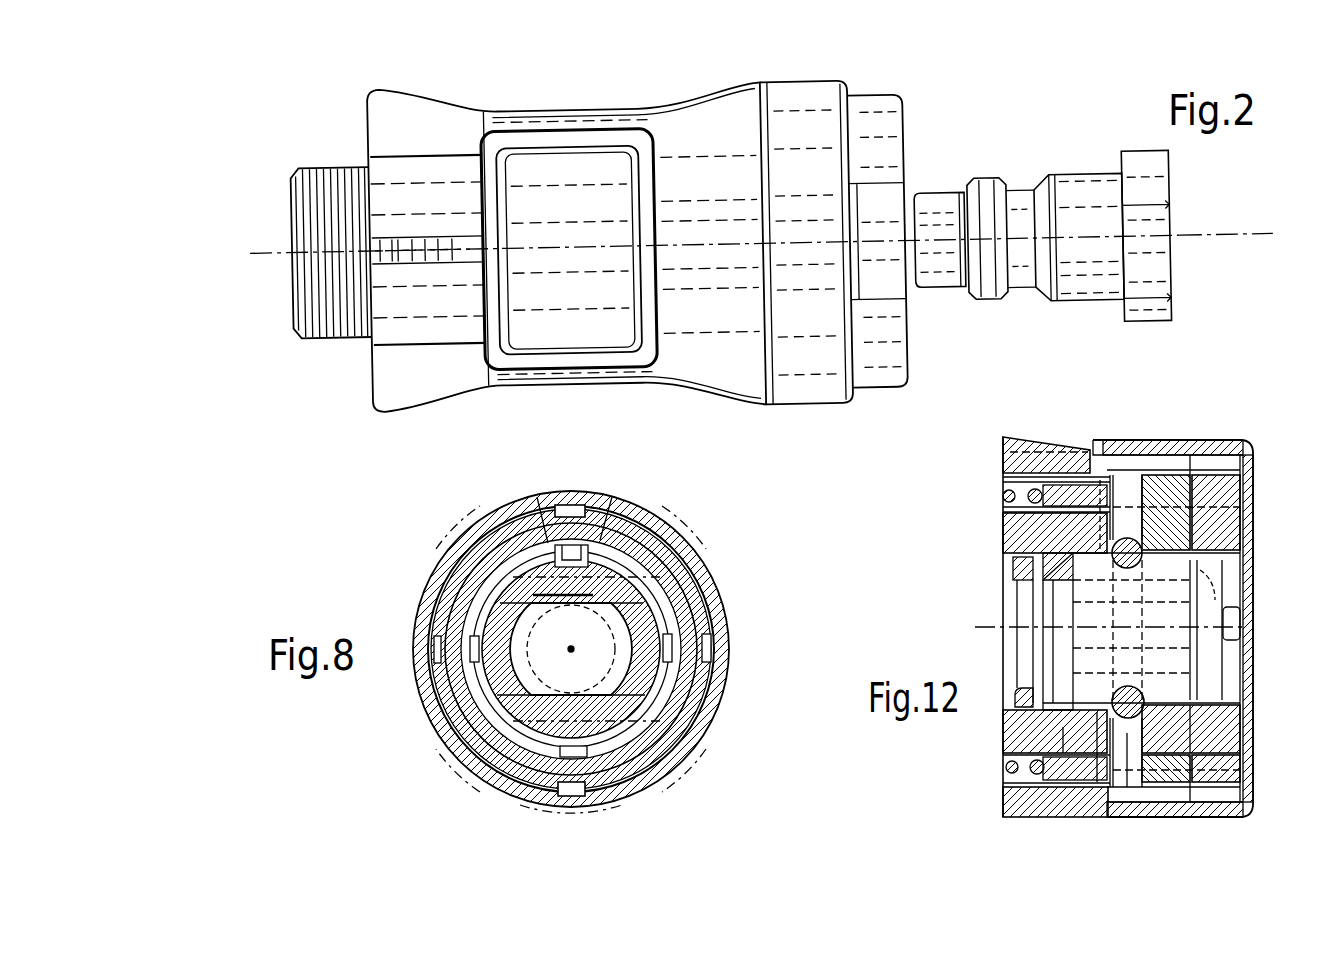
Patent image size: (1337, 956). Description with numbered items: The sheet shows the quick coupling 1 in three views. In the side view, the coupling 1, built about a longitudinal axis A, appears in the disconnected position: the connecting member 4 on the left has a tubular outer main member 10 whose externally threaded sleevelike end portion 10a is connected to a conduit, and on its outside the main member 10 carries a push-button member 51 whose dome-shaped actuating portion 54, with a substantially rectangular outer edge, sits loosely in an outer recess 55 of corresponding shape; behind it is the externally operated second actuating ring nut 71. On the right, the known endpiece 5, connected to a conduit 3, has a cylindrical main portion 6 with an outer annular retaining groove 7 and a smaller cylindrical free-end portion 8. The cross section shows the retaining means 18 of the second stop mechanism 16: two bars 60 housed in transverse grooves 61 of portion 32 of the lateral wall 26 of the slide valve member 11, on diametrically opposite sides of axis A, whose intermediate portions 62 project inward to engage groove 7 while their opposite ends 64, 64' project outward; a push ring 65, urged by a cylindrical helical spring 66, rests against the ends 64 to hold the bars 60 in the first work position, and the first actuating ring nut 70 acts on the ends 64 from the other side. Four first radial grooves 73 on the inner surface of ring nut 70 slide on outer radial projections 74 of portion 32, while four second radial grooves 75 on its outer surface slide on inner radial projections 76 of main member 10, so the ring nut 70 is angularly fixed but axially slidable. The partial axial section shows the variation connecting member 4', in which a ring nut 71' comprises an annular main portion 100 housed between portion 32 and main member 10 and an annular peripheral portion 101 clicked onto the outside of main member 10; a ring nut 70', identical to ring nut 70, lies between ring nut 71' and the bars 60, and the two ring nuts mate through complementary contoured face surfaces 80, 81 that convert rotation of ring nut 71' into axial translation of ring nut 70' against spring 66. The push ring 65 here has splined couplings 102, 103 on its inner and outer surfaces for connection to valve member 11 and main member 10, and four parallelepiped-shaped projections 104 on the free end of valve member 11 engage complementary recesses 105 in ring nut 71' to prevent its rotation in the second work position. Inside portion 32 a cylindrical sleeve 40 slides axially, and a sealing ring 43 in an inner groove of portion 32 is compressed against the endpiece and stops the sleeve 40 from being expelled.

In FIG. 2, the coupling 1 is at (918, 100).
In FIG. 2, the longitudinal axis A is at (1202, 236).
In FIG. 12, the longitudinal axis A is at (988, 626).
In FIG. 2, the conduit 3 is at (1138, 170).
In FIG. 2, the connecting member 4 is at (578, 259).
In FIG. 8, the connecting member 4 is at (542, 649).
In FIG. 12, the connecting member 4' is at (1240, 591).
In FIG. 2, the endpiece 5 is at (1072, 170).
In FIG. 8, the endpiece 5 is at (710, 583).
In FIG. 2, the cylindrical main portion 6 is at (1088, 270).
In FIG. 2, the outer annular retaining groove 7 is at (1025, 287).
In FIG. 2, the cylindrical free-end portion 8 is at (957, 253).
In FIG. 2, the outer main member 10 is at (445, 137).
In FIG. 8, the outer main member 10 is at (673, 528).
In FIG. 12, the outer main member 10 is at (1010, 805).
In FIG. 2, the externally threaded sleevelike end portion 10a is at (338, 190).
In FIG. 8, the slide valve member 11 is at (722, 698).
In FIG. 12, the slide valve member 11 is at (1003, 527).
In FIG. 12, the second stop mechanism 16 is at (1127, 735).
In FIG. 12, the retaining means 18 is at (1102, 530).
In FIG. 12, the lateral wall 26 is at (1045, 768).
In FIG. 12, the cylindrical portion 32 is at (1063, 727).
In FIG. 12, the cylindrical sleeve 40 is at (1003, 587).
In FIG. 12, the sealing ring 43 is at (1015, 712).
In FIG. 2, the push-button member 51 is at (570, 193).
In FIG. 2, the dome-shaped actuating portion 54 is at (582, 317).
In FIG. 2, the outer recess 55 is at (495, 200).
In FIG. 8, the bars 60 is at (497, 512).
In FIG. 12, the bars 60 is at (1127, 538).
In FIG. 8, the transverse grooves 61 is at (653, 523).
In FIG. 12, the transverse grooves 61 is at (1097, 712).
In FIG. 8, the intermediate portions 62 is at (590, 587).
In FIG. 8, the opposite ends 64 is at (579, 649).
In FIG. 8, the opposite ends 64' is at (446, 780).
In FIG. 12, the push ring 65 is at (1057, 490).
In FIG. 12, the cylindrical helical spring 66 is at (1003, 487).
In FIG. 8, the first actuating ring nut 70 is at (543, 649).
In FIG. 12, the first actuating ring nut 70' is at (1166, 581).
In FIG. 2, the second actuating ring nut 71 is at (877, 214).
In FIG. 12, the ring nut 71' is at (1281, 629).
In FIG. 8, the first radial grooves 73 is at (543, 505).
In FIG. 8, the outer radial projections 74 is at (590, 548).
In FIG. 8, the second radial grooves 75 is at (571, 798).
In FIG. 8, the inner radial projections 76 is at (613, 810).
In FIG. 12, the contoured face surface 80 is at (1258, 557).
In FIG. 12, the contoured face surface 81 is at (1255, 657).
In FIG. 12, the annular main portion 100 is at (1222, 817).
In FIG. 12, the annular peripheral portion 101 is at (1200, 438).
In FIG. 12, the splined coupling 102 is at (1012, 537).
In FIG. 12, the splined coupling 103 is at (1057, 475).
In FIG. 12, the parallelepiped-shaped projections 104 is at (1250, 492).
In FIG. 12, the complementary recesses 105 is at (1250, 524).